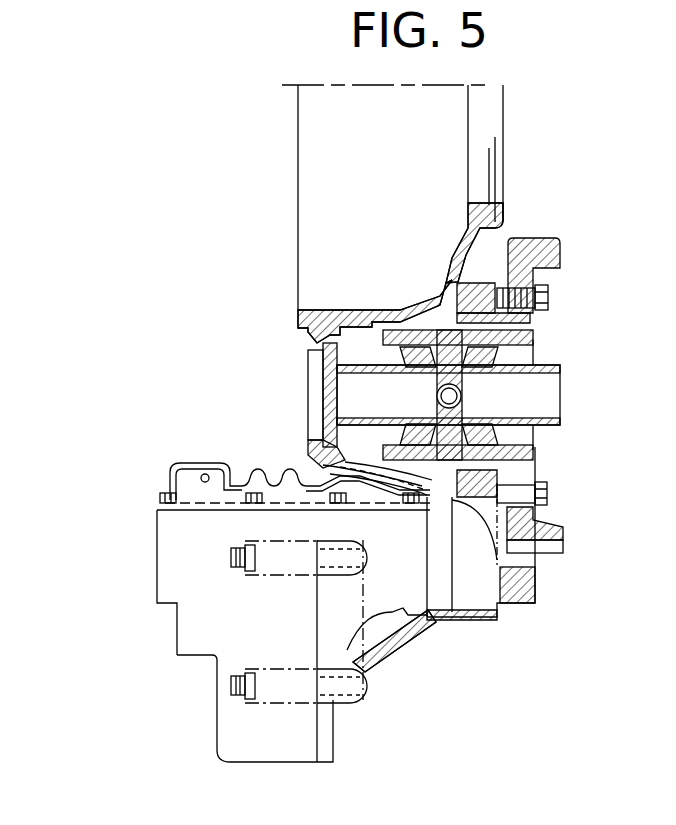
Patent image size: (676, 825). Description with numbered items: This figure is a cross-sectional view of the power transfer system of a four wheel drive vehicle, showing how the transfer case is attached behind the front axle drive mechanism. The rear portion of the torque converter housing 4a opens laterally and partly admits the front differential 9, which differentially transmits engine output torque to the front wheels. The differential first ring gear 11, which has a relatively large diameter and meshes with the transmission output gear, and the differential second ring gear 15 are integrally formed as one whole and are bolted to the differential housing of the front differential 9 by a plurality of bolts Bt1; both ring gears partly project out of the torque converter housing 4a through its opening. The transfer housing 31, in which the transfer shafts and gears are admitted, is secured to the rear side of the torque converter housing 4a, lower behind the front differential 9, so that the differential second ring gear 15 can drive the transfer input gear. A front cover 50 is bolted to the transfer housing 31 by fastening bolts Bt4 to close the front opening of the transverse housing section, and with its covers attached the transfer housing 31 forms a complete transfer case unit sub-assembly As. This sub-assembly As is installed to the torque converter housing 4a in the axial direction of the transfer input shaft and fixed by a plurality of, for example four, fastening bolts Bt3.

The differential second ring gear 15 is at (458, 262).
The front differential 9 is at (420, 332).
The differential first ring gear 11 is at (560, 258).
The bolts Bt1 is at (550, 300).
The torque converter housing 4a is at (306, 336).
The front cover 50 is at (180, 458).
The fastening bolts Bt4 is at (165, 492).
The transfer case unit sub-assembly As is at (152, 557).
The fastening bolts Bt3 is at (230, 686).
The transfer housing 31 is at (210, 707).